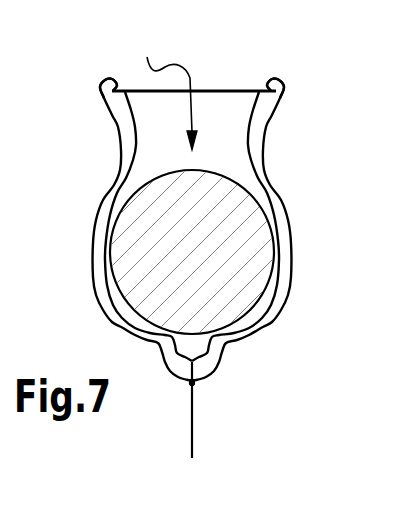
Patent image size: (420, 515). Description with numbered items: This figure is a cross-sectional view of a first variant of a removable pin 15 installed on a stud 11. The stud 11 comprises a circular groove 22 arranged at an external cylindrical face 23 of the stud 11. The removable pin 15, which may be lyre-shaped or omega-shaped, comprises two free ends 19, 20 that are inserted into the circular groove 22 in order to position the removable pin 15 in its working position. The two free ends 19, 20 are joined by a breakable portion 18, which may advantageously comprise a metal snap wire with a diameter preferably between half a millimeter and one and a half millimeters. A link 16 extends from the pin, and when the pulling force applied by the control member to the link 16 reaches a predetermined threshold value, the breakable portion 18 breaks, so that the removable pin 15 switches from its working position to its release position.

The stud 11 is at (252, 235).
The removable pin 15 is at (260, 152).
The link 16 is at (192, 407).
The breakable portion 18 is at (217, 90).
The free end 19 is at (117, 88).
The free end 20 is at (275, 85).
The circular groove 22 is at (167, 162).
The external cylindrical face 23 is at (165, 85).